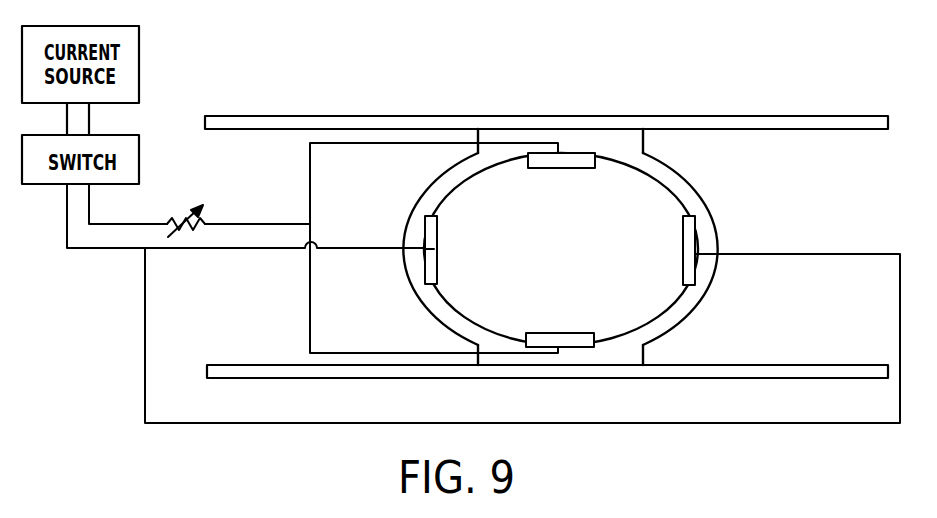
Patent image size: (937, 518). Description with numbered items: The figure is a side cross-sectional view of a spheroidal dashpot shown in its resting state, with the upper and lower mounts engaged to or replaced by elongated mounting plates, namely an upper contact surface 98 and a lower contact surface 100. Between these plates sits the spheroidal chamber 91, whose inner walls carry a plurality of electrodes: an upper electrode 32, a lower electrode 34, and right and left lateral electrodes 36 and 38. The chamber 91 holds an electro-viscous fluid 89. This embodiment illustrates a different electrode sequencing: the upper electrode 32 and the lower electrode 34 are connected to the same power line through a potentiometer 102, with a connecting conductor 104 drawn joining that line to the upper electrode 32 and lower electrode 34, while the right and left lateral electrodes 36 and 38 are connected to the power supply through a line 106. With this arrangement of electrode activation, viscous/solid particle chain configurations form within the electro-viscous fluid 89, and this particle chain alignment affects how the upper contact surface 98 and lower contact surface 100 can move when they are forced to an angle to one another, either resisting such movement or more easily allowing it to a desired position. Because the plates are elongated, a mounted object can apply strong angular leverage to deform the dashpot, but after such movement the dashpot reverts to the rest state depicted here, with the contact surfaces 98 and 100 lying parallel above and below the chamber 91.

The upper electrode 32 is at (577, 160).
The lower electrode 34 is at (585, 342).
The right lateral electrode 36 is at (692, 243).
The left lateral electrode 38 is at (430, 268).
The electro-viscous fluid 89 is at (566, 264).
The chamber 91 is at (673, 192).
The upper contact surface 98 is at (733, 122).
The lower contact surface 100 is at (733, 374).
The potentiometer 102 is at (186, 204).
The conductor 104 is at (381, 146).
The line 106 is at (478, 303).